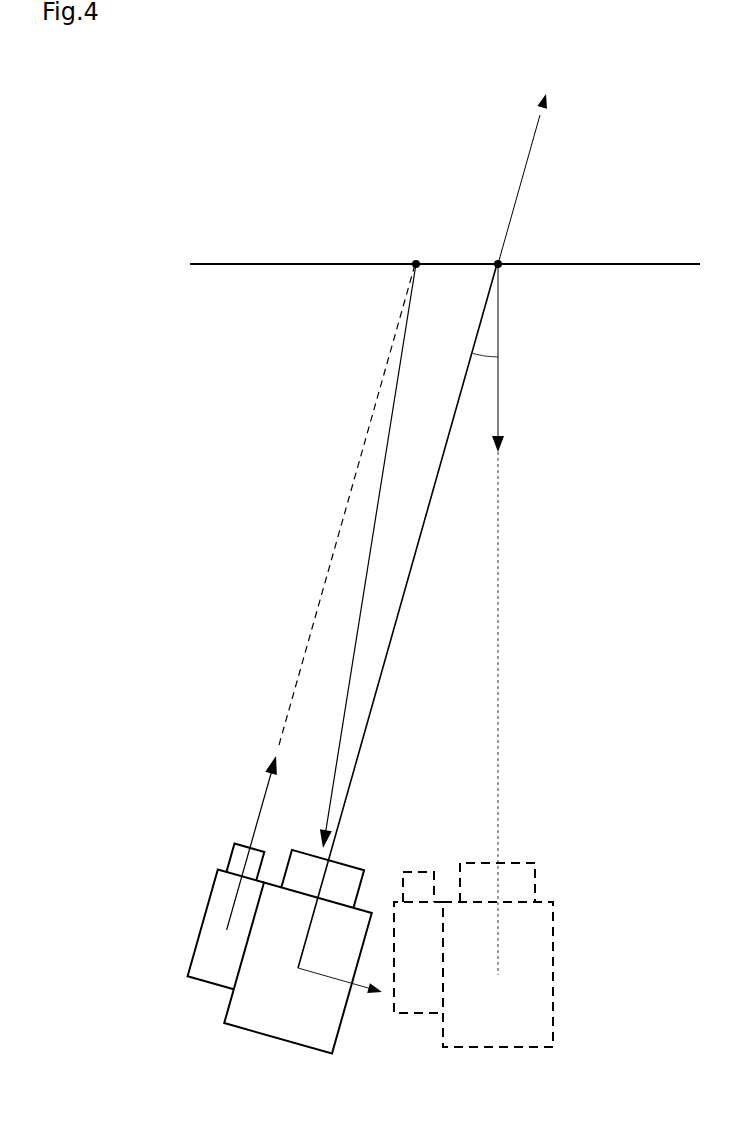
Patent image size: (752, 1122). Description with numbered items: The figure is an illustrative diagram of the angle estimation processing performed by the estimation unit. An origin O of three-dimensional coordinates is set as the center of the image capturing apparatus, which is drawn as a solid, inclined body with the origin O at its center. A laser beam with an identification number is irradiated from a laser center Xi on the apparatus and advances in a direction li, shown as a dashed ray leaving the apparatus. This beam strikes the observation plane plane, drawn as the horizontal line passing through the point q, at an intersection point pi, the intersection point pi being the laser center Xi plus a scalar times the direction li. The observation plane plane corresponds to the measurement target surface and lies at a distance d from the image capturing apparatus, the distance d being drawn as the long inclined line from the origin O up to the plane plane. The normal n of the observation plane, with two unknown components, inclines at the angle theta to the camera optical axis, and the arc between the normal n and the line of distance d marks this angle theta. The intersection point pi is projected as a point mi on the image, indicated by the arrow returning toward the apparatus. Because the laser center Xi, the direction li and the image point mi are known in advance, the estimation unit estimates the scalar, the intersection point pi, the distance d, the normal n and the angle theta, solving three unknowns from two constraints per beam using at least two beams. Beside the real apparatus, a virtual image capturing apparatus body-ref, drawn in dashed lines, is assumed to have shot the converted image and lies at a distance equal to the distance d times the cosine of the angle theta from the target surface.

The observation plane is at (412, 246).
The intersection point pi is at (392, 240).
The point on observation plane q is at (558, 181).
The normal of observation plane n is at (548, 619).
The inclination angle theta is at (485, 371).
The distance d is at (397, 616).
The projected image point mi is at (355, 556).
The laser beam direction li is at (317, 597).
The laser center Xi is at (274, 943).
The origin of three-dimensional coordinates O is at (330, 994).
The virtual image capturing apparatus body-ref is at (473, 955).